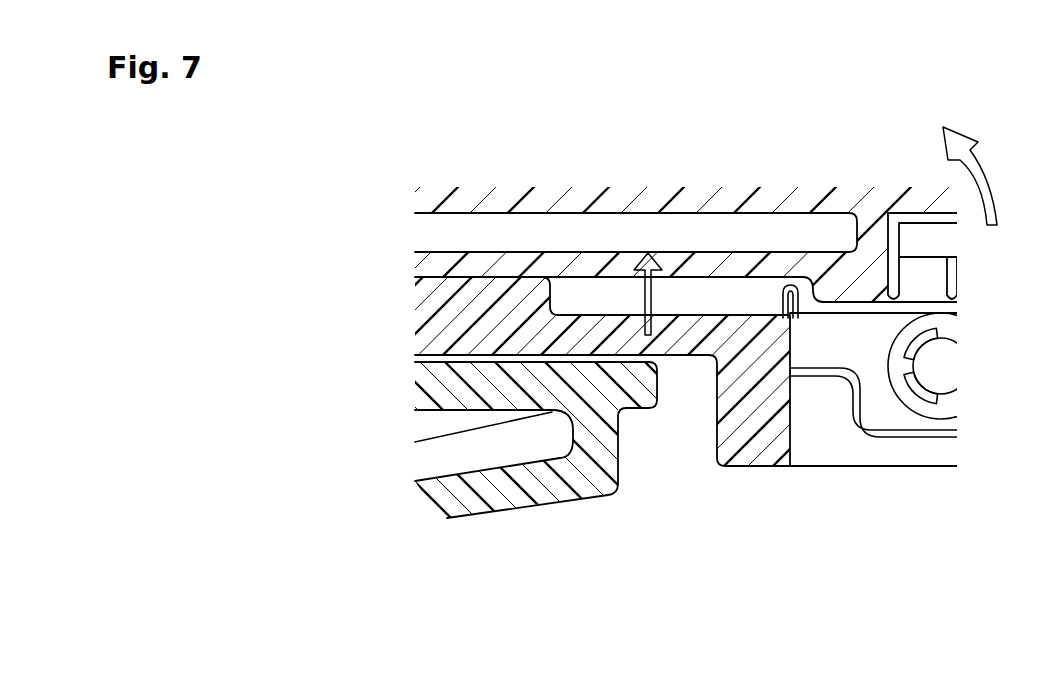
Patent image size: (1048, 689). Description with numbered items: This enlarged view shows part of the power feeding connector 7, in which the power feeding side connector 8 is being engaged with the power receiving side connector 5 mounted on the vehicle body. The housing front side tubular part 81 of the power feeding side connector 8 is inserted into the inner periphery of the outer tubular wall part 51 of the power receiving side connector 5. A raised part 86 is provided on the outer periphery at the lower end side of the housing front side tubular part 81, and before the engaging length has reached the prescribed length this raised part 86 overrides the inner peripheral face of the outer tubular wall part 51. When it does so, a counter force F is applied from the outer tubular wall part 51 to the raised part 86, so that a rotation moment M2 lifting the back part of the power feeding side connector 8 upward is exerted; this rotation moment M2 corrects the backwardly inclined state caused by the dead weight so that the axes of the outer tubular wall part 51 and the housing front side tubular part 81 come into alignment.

The power receiving side connector 5 is at (468, 514).
The power feeding connector 7 is at (913, 480).
The power feeding side connector 8 is at (788, 480).
The outer tubular wall part 51 is at (637, 410).
The housing front side tubular part 81 is at (583, 327).
The raised part 86 is at (690, 365).
The counter force F is at (666, 273).
The rotation moment M2 is at (984, 169).